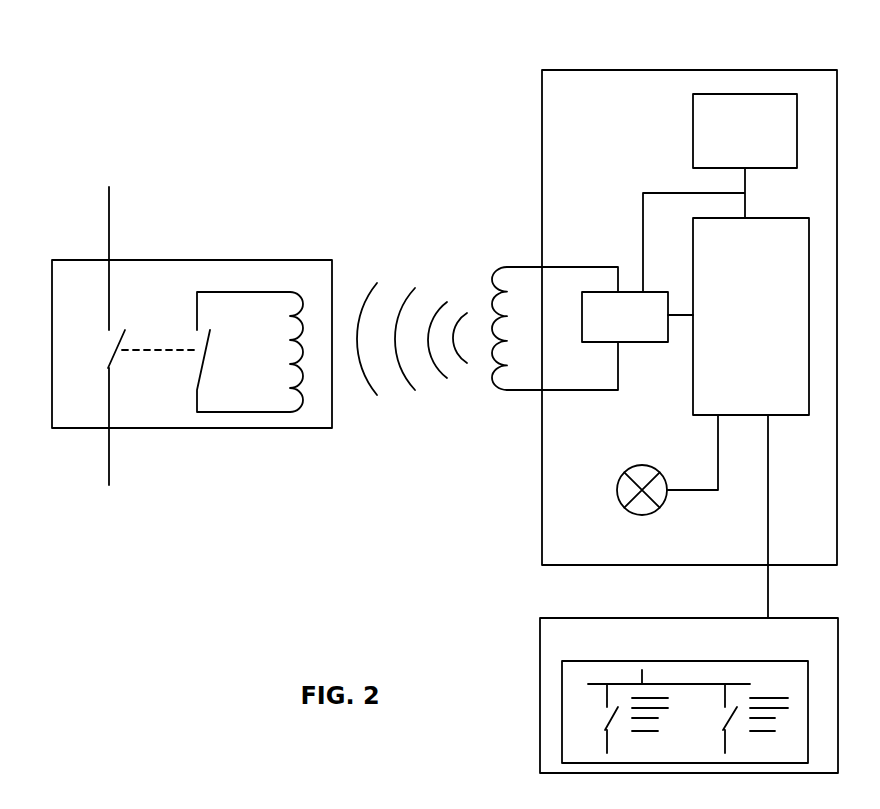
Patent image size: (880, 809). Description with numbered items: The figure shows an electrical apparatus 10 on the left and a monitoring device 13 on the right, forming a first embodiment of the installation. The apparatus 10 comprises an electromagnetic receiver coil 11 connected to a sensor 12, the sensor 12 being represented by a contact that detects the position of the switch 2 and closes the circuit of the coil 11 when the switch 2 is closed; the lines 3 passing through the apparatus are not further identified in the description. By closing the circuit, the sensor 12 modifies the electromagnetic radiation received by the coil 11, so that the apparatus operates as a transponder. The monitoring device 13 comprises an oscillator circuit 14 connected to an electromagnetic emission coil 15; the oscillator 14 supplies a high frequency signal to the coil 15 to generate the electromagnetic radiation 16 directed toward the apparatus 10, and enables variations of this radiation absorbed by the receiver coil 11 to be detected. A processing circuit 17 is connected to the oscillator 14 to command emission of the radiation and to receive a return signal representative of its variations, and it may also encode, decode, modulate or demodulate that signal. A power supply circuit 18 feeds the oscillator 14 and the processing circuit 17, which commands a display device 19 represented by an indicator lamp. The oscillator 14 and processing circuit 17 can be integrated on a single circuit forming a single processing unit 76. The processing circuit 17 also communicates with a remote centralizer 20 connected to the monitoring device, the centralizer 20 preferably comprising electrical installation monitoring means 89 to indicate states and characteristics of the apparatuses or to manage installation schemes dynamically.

The switch 2 is at (108, 345).
The conductor lines 3 is at (108, 205).
The electrical apparatus 10 is at (183, 258).
The electromagnetic receiver coil 11 is at (293, 327).
The sensor 12 is at (215, 345).
The monitoring device 13 is at (627, 314).
The oscillator circuit 14 is at (658, 343).
The electromagnetic emission coil 15 is at (503, 267).
The electromagnetic radiation 16 is at (388, 373).
The processing circuit 17 is at (693, 380).
The power supply circuit 18 is at (693, 128).
The display device 19 is at (623, 506).
The remote centralizer 20 is at (540, 672).
The single processing unit 76 is at (540, 102).
The electrical installation monitoring means 89 is at (562, 730).